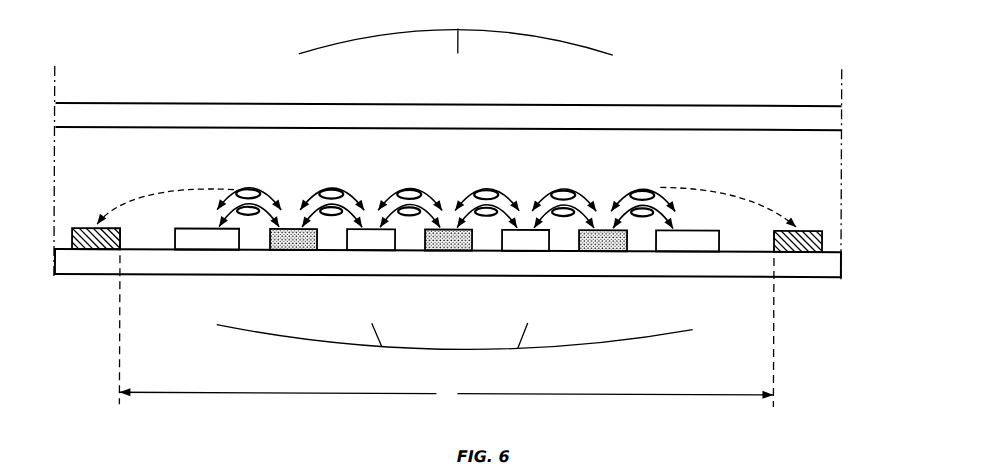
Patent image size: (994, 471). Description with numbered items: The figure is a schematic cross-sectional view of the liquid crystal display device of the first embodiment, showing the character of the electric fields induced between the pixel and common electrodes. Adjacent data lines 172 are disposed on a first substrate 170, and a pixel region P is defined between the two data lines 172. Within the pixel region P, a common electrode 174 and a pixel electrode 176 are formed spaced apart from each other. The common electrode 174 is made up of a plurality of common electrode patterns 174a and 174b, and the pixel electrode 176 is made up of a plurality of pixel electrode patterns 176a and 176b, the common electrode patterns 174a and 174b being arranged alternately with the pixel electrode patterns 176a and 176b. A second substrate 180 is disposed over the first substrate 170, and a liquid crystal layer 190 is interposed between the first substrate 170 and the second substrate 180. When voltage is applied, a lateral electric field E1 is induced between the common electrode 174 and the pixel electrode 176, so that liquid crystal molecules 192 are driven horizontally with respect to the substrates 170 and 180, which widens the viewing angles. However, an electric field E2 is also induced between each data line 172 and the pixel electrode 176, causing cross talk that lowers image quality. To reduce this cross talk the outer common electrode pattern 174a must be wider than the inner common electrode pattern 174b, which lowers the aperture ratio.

The first substrate 170 is at (830, 264).
The data lines 172 is at (93, 240).
The common electrode 174 is at (455, 348).
The outer common electrode pattern 174a is at (215, 240).
The inner common electrode pattern 174b is at (371, 241).
The pixel electrode 176 is at (456, 30).
The pixel electrode pattern 176a is at (450, 228).
The pixel electrode pattern 176b is at (293, 228).
The second substrate 180 is at (830, 115).
The liquid crystal layer 190 is at (830, 184).
The liquid crystal molecules 192 is at (249, 188).
The lateral electric field E1 is at (332, 186).
The electric field E2 is at (168, 187).
The pixel region P is at (446, 318).